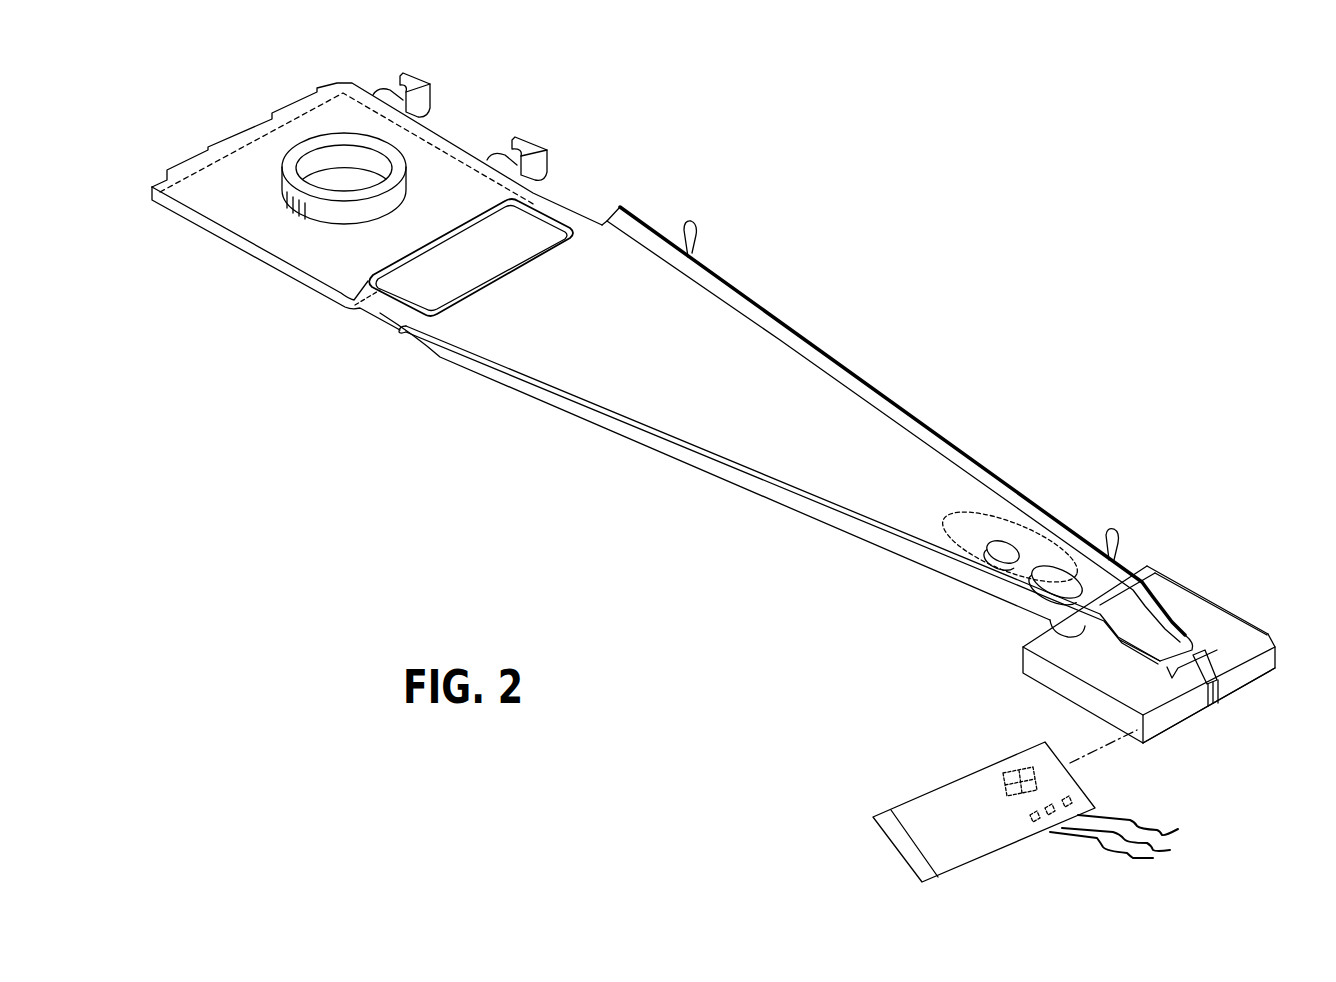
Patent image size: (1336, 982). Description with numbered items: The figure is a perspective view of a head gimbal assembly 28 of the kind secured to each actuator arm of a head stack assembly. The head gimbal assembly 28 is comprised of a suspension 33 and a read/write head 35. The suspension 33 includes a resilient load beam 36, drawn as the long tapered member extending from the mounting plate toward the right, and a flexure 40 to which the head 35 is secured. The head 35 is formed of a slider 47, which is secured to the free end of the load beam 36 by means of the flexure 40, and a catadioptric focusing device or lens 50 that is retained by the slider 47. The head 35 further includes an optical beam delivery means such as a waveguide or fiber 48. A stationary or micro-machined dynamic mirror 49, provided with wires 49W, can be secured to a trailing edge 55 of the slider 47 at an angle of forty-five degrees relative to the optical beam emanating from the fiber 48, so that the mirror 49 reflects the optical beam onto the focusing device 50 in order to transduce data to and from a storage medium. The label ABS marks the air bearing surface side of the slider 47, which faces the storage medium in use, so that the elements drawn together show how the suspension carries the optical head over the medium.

The head gimbal assembly 28 is at (827, 204).
The suspension 33 is at (1006, 450).
The read/write head 35 is at (1182, 555).
The load beam 36 is at (812, 403).
The flexure 40 is at (1055, 623).
The slider 47 is at (1212, 600).
The fiber 48 is at (1206, 652).
The mirror 49 is at (970, 777).
The wires 49W is at (1191, 852).
The focusing device 50 is at (1215, 703).
The trailing edge 55 is at (1277, 663).
The air bearing surface ABS is at (1172, 732).